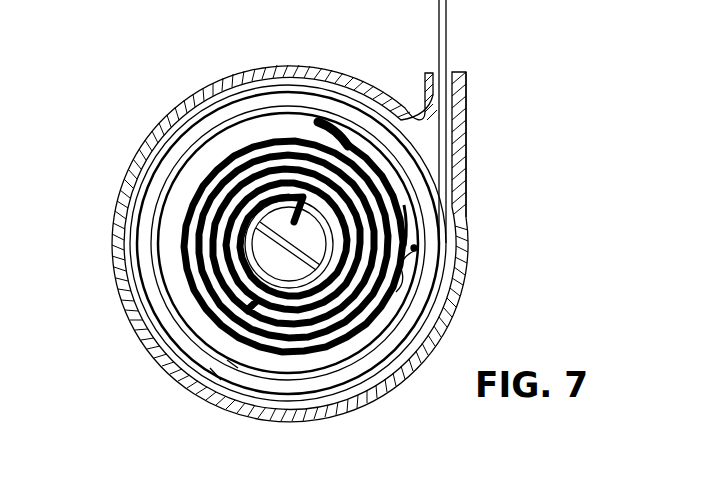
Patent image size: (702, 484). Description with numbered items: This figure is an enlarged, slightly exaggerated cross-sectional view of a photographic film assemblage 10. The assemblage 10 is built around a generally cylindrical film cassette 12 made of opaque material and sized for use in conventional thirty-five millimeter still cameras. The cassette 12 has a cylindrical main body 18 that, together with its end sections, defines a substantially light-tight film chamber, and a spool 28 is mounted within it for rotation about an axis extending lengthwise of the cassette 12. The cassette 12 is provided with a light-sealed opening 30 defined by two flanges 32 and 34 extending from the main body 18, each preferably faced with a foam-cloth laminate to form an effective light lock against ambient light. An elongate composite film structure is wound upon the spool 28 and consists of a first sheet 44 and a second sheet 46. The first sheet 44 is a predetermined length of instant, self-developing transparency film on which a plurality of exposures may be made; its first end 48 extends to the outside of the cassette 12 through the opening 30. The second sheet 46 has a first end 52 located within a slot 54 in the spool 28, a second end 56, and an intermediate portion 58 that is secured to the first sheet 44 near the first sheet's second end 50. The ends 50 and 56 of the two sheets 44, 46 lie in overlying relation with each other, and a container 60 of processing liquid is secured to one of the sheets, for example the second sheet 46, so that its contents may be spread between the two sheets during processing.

The photographic film assemblage 10 is at (147, 127).
The film cassette 12 is at (468, 192).
The cylindrical main body 18 is at (124, 178).
The spool 28 is at (258, 246).
The opening 30 is at (450, 72).
The flange 32 is at (464, 106).
The flange 34 is at (425, 88).
The first sheet 44 is at (142, 300).
The second sheet 46 is at (207, 316).
The first end 48 is at (447, 32).
The second end 50 is at (418, 250).
The first end 52 is at (298, 252).
The slot 54 is at (292, 212).
The second end 56 is at (402, 268).
The intermediate portion 58 is at (322, 116).
The container of processing liquid 60 is at (406, 226).